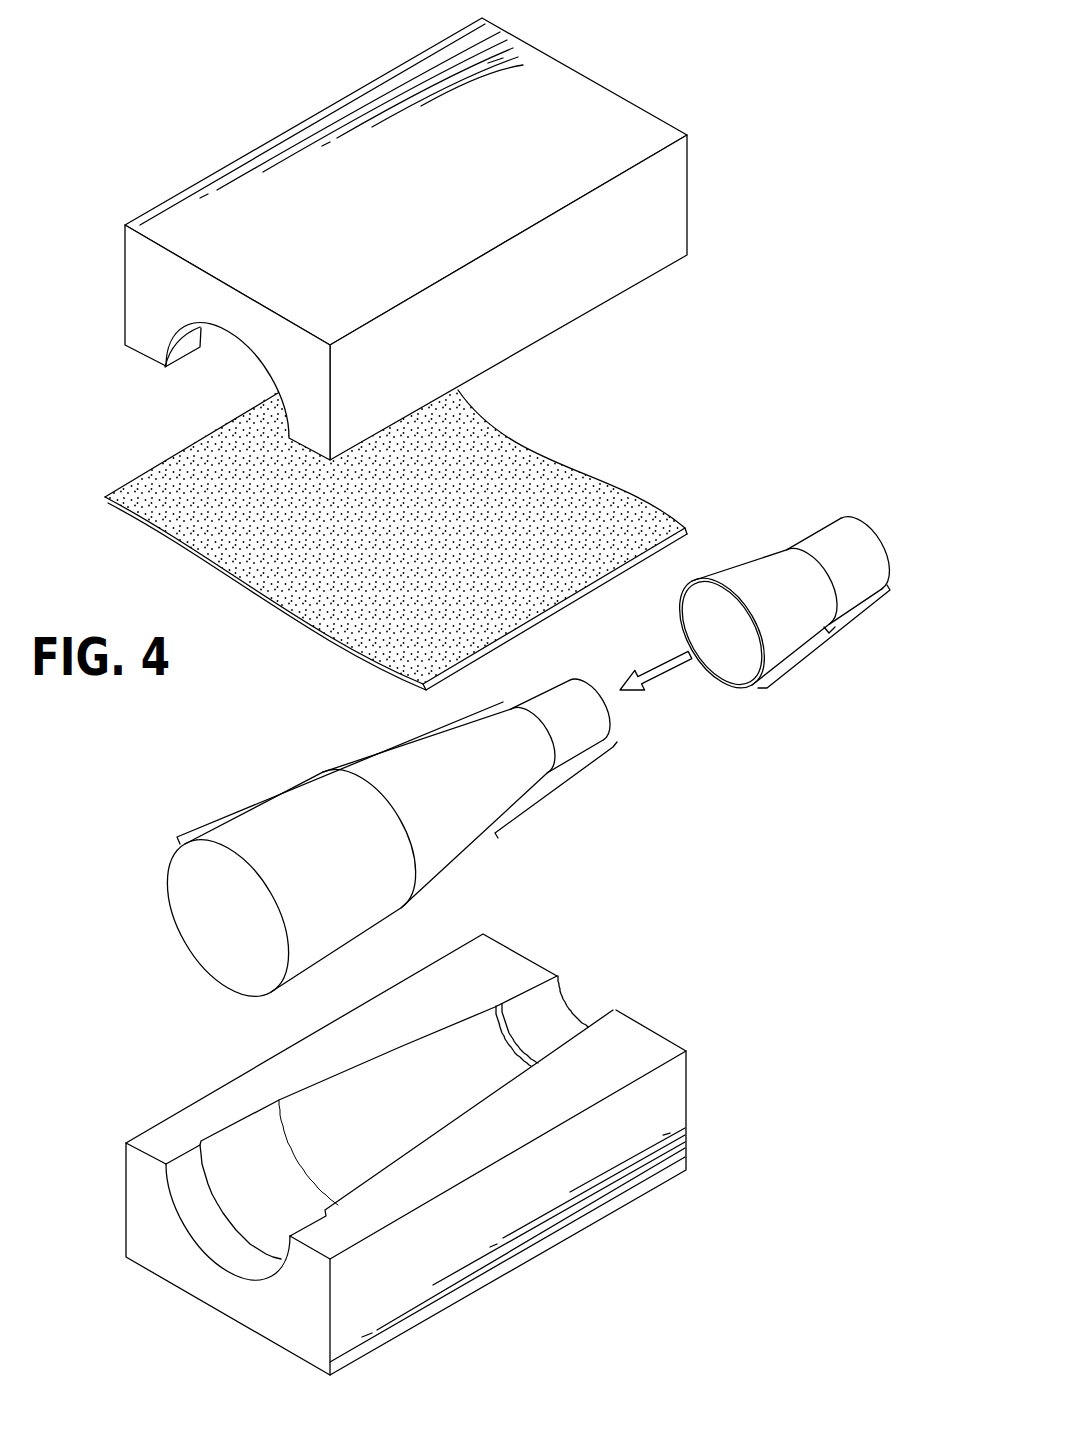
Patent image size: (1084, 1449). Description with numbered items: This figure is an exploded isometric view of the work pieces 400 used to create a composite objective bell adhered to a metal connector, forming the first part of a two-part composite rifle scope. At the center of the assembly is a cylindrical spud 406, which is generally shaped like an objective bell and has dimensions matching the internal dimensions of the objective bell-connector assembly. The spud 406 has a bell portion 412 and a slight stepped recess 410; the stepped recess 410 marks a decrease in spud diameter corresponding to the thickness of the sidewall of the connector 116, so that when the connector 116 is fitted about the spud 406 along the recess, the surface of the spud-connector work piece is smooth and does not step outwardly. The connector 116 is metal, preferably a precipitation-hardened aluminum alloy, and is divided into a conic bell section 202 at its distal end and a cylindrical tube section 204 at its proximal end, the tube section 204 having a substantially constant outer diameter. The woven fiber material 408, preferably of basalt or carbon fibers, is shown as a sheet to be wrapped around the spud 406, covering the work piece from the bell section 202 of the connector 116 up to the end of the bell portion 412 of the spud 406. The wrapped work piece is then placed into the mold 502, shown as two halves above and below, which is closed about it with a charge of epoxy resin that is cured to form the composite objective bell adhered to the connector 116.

The work pieces 400 is at (256, 79).
The mold 502 is at (687, 197).
The woven fiber material 408 is at (603, 478).
The connector 116 is at (752, 557).
The tube section 204 is at (858, 616).
The bell section 202 is at (797, 663).
The bell portion 412 is at (283, 760).
The stepped recess 410 is at (552, 787).
The spud 406 is at (427, 897).